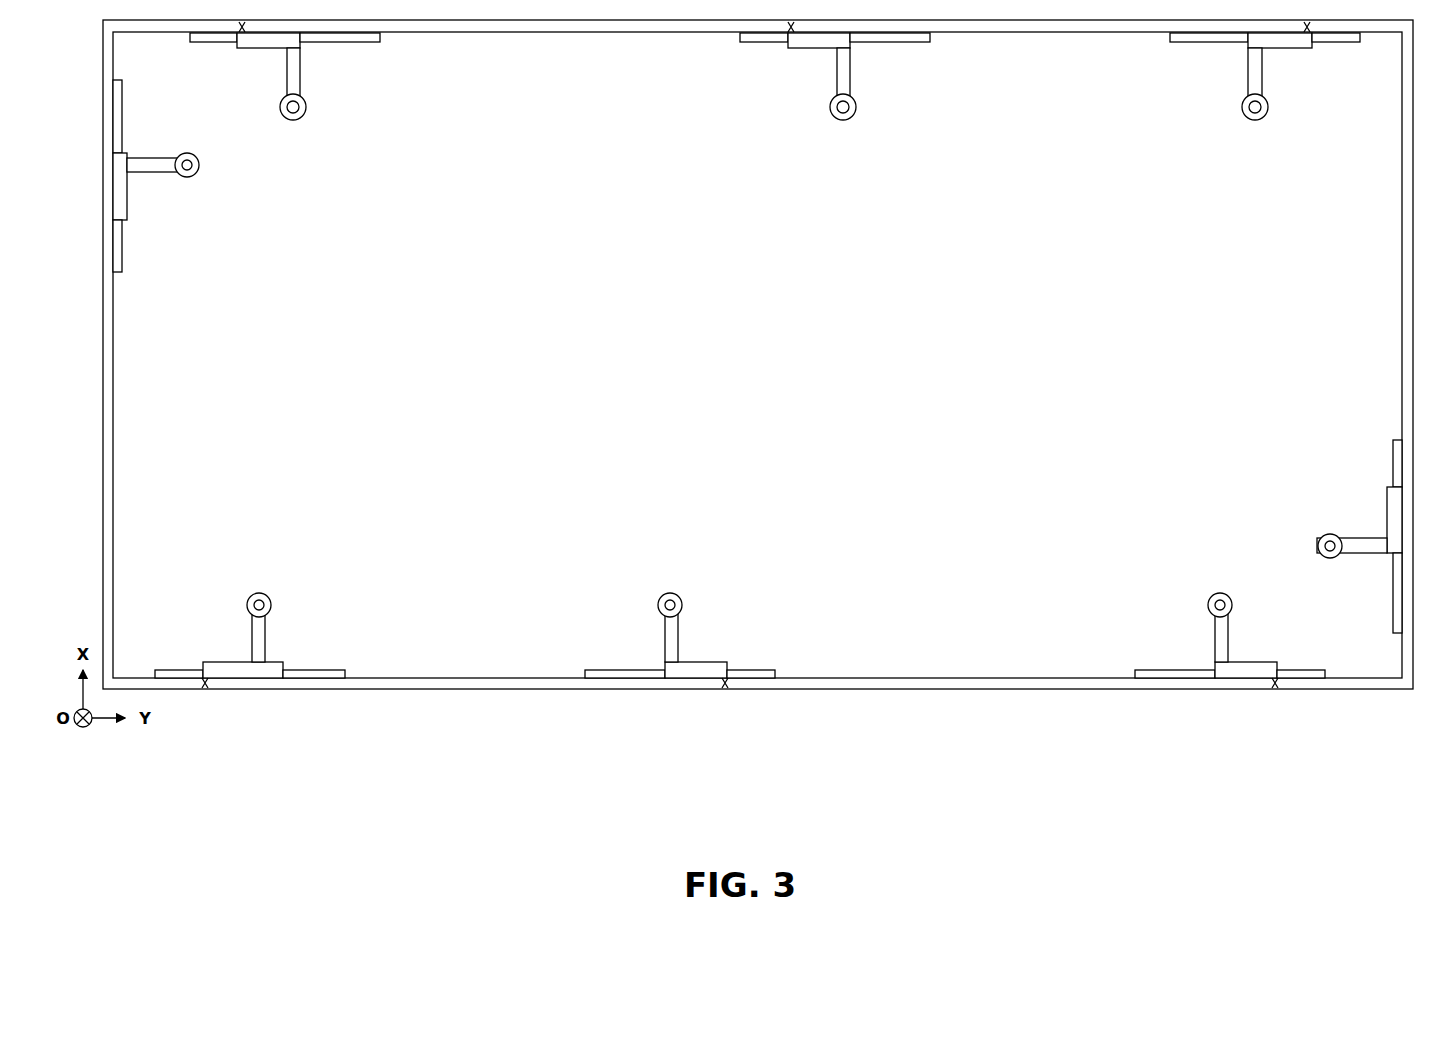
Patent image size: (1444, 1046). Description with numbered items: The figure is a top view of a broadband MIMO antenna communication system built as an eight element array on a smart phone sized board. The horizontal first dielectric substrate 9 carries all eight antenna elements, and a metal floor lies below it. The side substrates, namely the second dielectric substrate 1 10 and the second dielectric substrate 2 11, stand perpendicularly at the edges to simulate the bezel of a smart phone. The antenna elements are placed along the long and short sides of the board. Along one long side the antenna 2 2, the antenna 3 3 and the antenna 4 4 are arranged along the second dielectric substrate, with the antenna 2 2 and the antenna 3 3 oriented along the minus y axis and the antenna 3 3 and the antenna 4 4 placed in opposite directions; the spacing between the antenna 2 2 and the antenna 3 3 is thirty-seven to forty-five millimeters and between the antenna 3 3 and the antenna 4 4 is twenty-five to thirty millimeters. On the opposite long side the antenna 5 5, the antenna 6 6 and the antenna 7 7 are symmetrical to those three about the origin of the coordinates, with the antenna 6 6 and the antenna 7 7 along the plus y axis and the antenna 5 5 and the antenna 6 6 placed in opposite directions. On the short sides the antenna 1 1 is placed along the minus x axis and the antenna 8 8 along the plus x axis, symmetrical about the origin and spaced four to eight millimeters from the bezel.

The antenna 1 is at (130, 173).
The antenna 2 is at (320, 40).
The antenna 3 is at (873, 45).
The antenna 4 is at (1290, 50).
The antenna 5 is at (239, 661).
The antenna 6 is at (647, 666).
The antenna 7 is at (1186, 668).
The antenna 8 is at (1375, 533).
The first dielectric substrate 9 is at (710, 343).
The second dielectric substrate 1 10 is at (605, 35).
The second dielectric substrate 2 11 is at (112, 418).